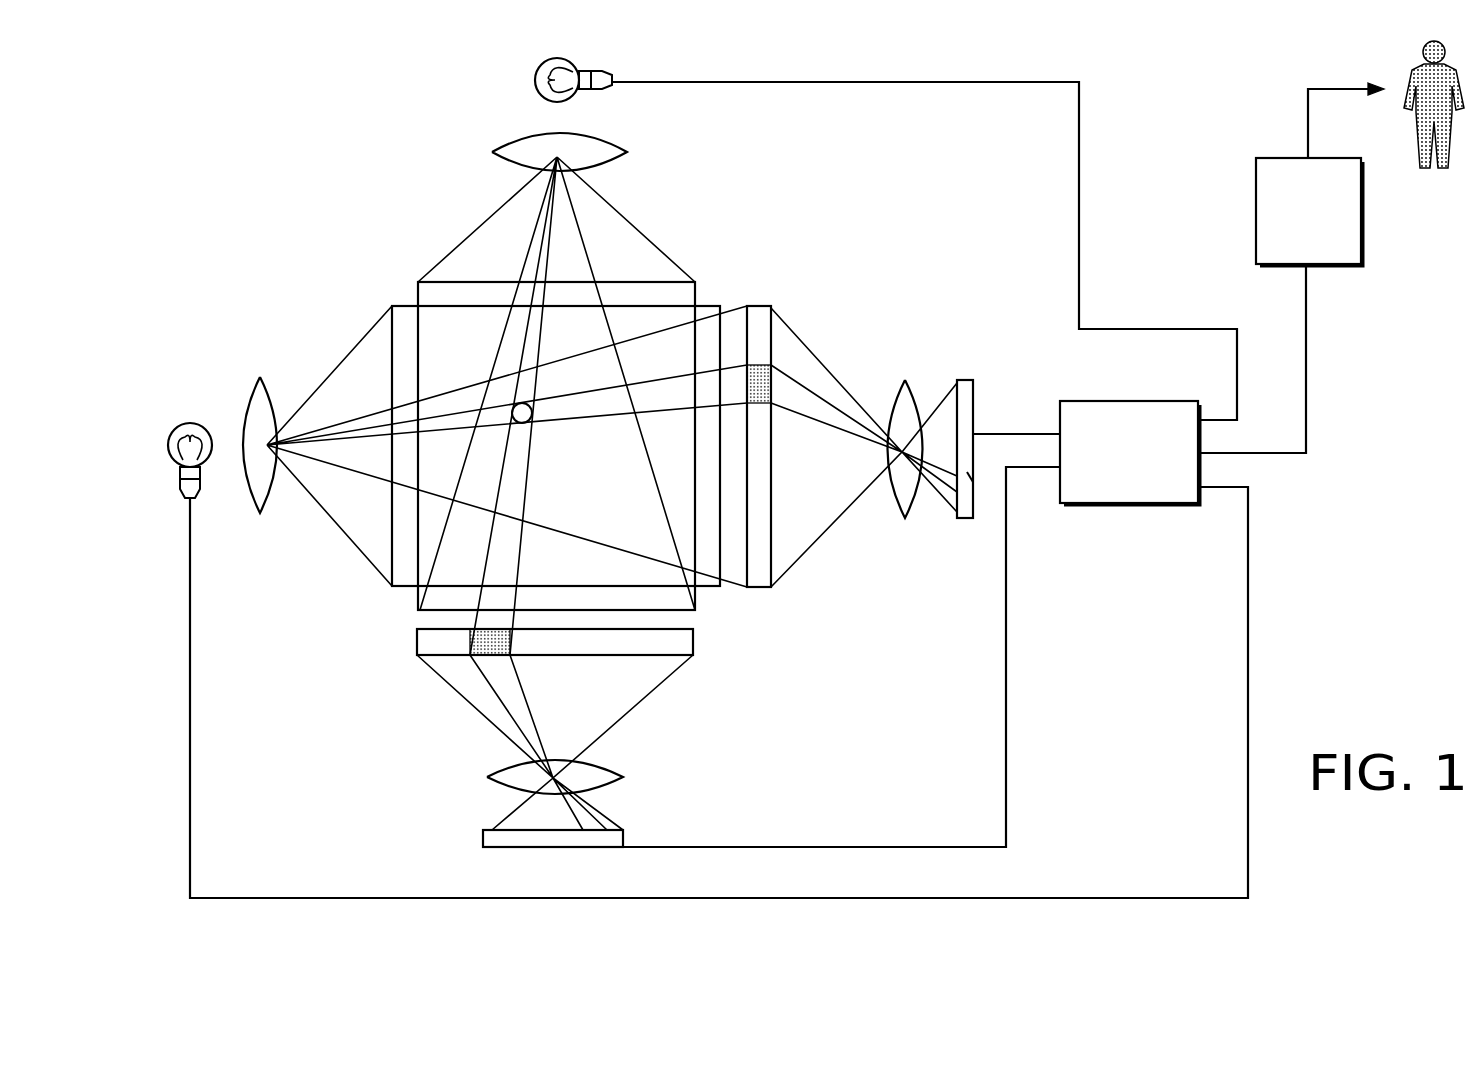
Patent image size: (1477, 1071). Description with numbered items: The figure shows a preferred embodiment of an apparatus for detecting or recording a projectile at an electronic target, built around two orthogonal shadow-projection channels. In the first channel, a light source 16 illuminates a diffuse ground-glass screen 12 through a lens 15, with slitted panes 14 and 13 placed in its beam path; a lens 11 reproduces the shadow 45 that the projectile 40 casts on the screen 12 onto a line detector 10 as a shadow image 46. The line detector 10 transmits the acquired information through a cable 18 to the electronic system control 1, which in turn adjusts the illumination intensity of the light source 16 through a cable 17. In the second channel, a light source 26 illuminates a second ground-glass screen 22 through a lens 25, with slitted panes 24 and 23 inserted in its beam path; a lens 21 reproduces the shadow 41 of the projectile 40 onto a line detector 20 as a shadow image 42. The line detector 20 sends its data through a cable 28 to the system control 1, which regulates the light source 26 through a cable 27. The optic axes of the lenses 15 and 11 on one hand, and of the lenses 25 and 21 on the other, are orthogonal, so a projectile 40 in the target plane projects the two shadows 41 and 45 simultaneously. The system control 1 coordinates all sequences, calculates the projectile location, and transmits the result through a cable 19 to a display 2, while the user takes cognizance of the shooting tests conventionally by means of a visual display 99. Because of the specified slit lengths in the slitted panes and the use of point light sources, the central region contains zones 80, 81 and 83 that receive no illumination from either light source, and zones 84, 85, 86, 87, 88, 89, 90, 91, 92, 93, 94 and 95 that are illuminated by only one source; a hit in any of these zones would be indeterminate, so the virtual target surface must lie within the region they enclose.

The system control 1 is at (1130, 453).
The display 2 is at (1309, 212).
The line detector 10 is at (964, 380).
The optics (lens) 11 is at (902, 380).
The screen 12 is at (760, 306).
The slitted pane 13 is at (719, 304).
The slitted pane 14 is at (390, 306).
The optics (lens) 15 is at (257, 377).
The light source 16 is at (188, 422).
The cable 17 is at (187, 753).
The cable 18 is at (1009, 431).
The cable 19 is at (1263, 452).
The line detector 20 is at (483, 833).
The optics (lens) 21 is at (487, 777).
The second ground-glass screen 22 is at (415, 648).
The slitted pane 23 is at (416, 600).
The slitted pane 24 is at (650, 280).
The optics (lens) 25 is at (497, 153).
The light source 26 is at (534, 74).
The cable 27 is at (860, 84).
The cable 28 is at (775, 846).
The projectile 40 is at (528, 423).
The shadow 41 is at (492, 657).
The shadow image 42 is at (584, 834).
The shadow 45 is at (773, 393).
The shadow image 46 is at (975, 478).
The zone 80 is at (438, 324).
The zone 81 is at (657, 323).
The zone 83 is at (432, 510).
The zone 84 is at (508, 365).
The zone 85 is at (531, 331).
The zone 86 is at (571, 322).
The zone 87 is at (674, 360).
The zone 88 is at (674, 398).
The zone 89 is at (674, 428).
The zone 90 is at (546, 568).
The zone 91 is at (497, 568).
The zone 92 is at (457, 568).
The zone 93 is at (432, 448).
The zone 94 is at (442, 425).
The zone 95 is at (467, 403).
The visual display 99 is at (1306, 132).